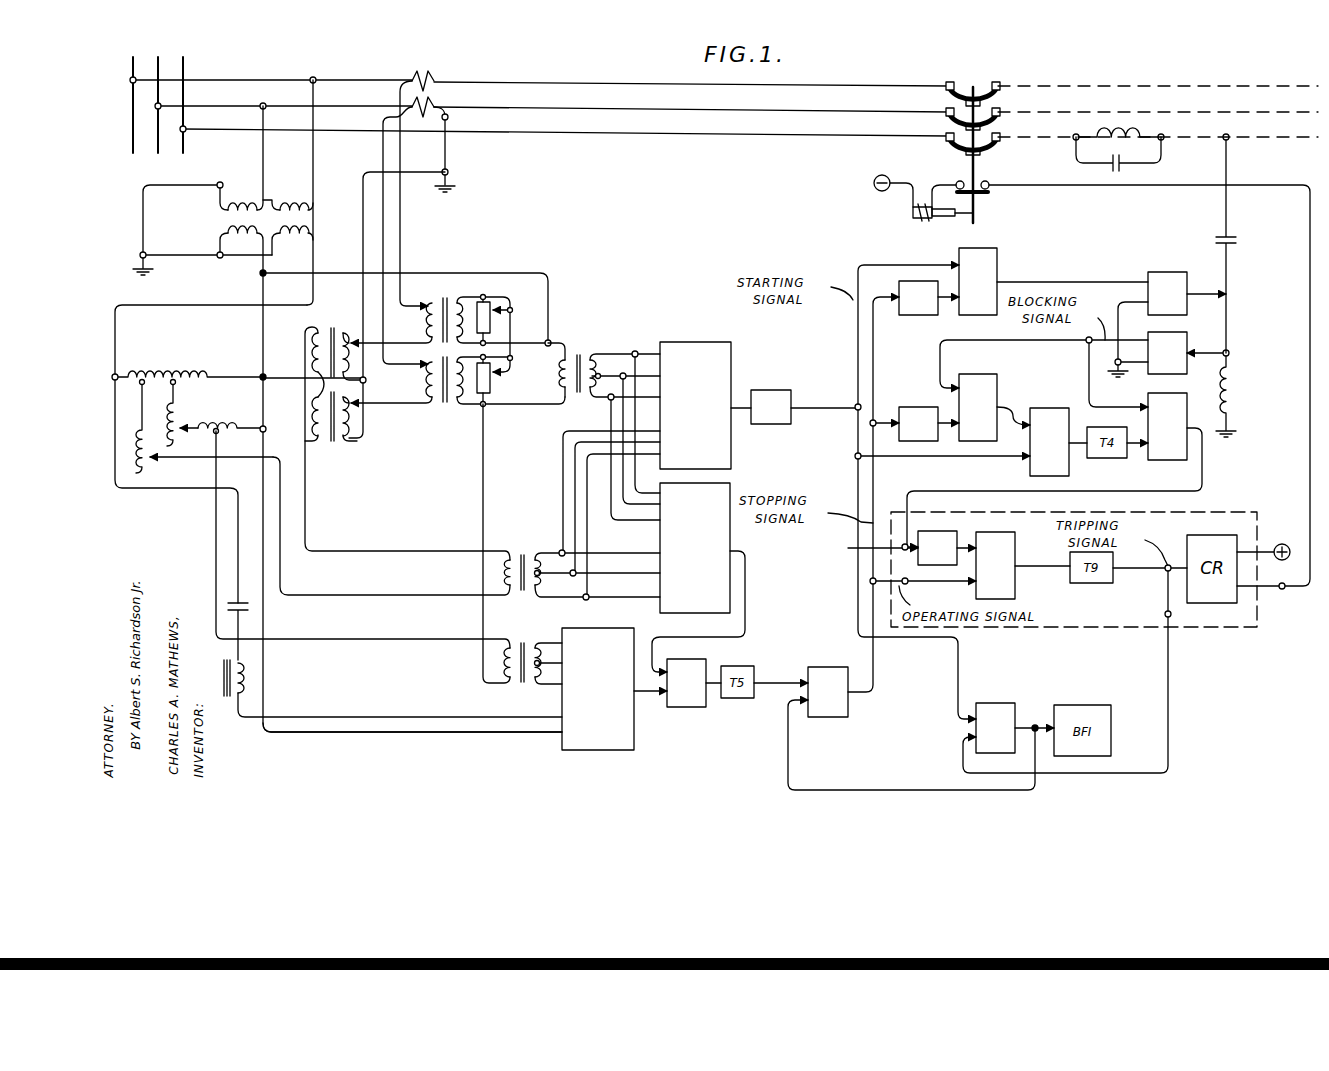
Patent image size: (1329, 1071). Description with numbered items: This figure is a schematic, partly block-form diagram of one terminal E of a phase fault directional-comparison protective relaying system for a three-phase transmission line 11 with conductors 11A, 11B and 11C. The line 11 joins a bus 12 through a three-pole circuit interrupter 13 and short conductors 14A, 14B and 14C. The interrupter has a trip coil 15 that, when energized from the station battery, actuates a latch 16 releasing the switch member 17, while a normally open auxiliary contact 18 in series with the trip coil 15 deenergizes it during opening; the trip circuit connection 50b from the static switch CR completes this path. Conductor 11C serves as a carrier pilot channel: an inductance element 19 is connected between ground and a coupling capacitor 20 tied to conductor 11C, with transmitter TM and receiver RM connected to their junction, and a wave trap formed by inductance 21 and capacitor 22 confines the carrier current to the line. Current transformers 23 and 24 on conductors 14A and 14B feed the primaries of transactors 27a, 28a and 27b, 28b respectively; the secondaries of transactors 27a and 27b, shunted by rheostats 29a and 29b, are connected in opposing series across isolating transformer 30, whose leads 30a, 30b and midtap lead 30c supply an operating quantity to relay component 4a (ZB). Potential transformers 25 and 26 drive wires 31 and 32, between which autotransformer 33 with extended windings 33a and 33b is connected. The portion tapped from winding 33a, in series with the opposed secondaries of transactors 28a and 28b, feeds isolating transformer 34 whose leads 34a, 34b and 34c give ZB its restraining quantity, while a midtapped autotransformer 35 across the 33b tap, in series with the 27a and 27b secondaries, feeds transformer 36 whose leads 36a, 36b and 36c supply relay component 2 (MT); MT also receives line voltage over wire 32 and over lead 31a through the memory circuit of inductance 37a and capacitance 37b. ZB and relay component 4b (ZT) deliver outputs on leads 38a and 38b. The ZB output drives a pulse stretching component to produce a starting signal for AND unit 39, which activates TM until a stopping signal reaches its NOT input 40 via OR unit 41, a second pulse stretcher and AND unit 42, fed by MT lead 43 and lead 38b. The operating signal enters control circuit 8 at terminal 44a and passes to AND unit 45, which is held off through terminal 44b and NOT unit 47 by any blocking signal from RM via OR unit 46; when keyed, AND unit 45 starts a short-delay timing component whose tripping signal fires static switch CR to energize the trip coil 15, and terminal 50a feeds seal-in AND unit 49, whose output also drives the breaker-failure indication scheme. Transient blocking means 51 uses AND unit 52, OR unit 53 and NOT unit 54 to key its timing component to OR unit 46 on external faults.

The relay component MT 2 is at (597, 750).
The relay component ZB 4a is at (701, 342).
The relay component ZT 4b is at (705, 613).
The control circuit 8 is at (1200, 630).
The electric power transmission line 11 is at (1098, 76).
The phase conductor 11A is at (1237, 86).
The phase conductor 11B is at (1237, 112).
The phase conductor 11C is at (1237, 137).
The bus 12 is at (175, 52).
The circuit interrupter 13 is at (982, 76).
The conductor 14A is at (570, 82).
The conductor 14B is at (570, 108).
The conductor 14C is at (570, 131).
The trip coil 15 is at (912, 222).
The latch 16 is at (960, 218).
The switch member 17 is at (976, 168).
The auxiliary contact 18 is at (990, 196).
The inductance element 19 is at (1232, 390).
The coupling capacitor 20 is at (1240, 240).
The inductance 21 is at (1096, 130).
The capacitor 22 is at (1111, 167).
The instrument current transformer 23 is at (428, 72).
The instrument current transformer 24 is at (430, 104).
The instrument potential transformer 25 is at (312, 222).
The instrument potential transformer 26 is at (220, 220).
The transactor 27a is at (449, 319).
The transactor 27b is at (458, 391).
The transactor 28a is at (407, 435).
The transactor 28b is at (331, 416).
The rheostat 29a is at (490, 324).
The rheostat 29b is at (490, 389).
The isolating transformer 30 is at (588, 346).
The lead 30a is at (634, 351).
The lead 30b is at (593, 397).
The lead 30c is at (612, 374).
The wire 31 is at (213, 305).
The lead 31a is at (415, 717).
The wire 32 is at (262, 331).
The autotransformer 33 is at (186, 363).
The extended winding 33a is at (148, 468).
The extended winding 33b is at (178, 405).
The autotransformer 35 is at (236, 425).
The isolating transformer 34 is at (530, 613).
The lead 34a is at (560, 550).
The lead 34b is at (562, 600).
The lead 34c is at (548, 577).
The isolating transformer 36 is at (530, 702).
The lead 36a is at (546, 642).
The lead 36b is at (550, 686).
The lead 36c is at (545, 664).
The inductance element 37a is at (248, 676).
The capacitance element 37b is at (250, 606).
The lead 38a is at (741, 408).
The lead 38b is at (748, 592).
The AND logic unit 39 is at (1000, 256).
The NOT input 40 is at (916, 316).
The OR logic unit 41 is at (825, 717).
The AND logic unit 42 is at (695, 707).
The lead 43 is at (648, 693).
The input terminal 44a is at (905, 584).
The input terminal 44b is at (869, 548).
The AND logic unit 45 is at (1015, 585).
The OR logic unit 46 is at (1165, 460).
The NOT logic unit 47 is at (938, 535).
The AND logic unit 49 is at (1002, 703).
The terminal 50a is at (1172, 614).
The trip circuit conductor 50b is at (1283, 590).
The transient blocking means 51 is at (1047, 374).
The AND logic unit 52 is at (1069, 466).
The OR logic unit 53 is at (979, 374).
The NOT logic unit 54 is at (918, 407).
The line terminal E is at (700, 219).